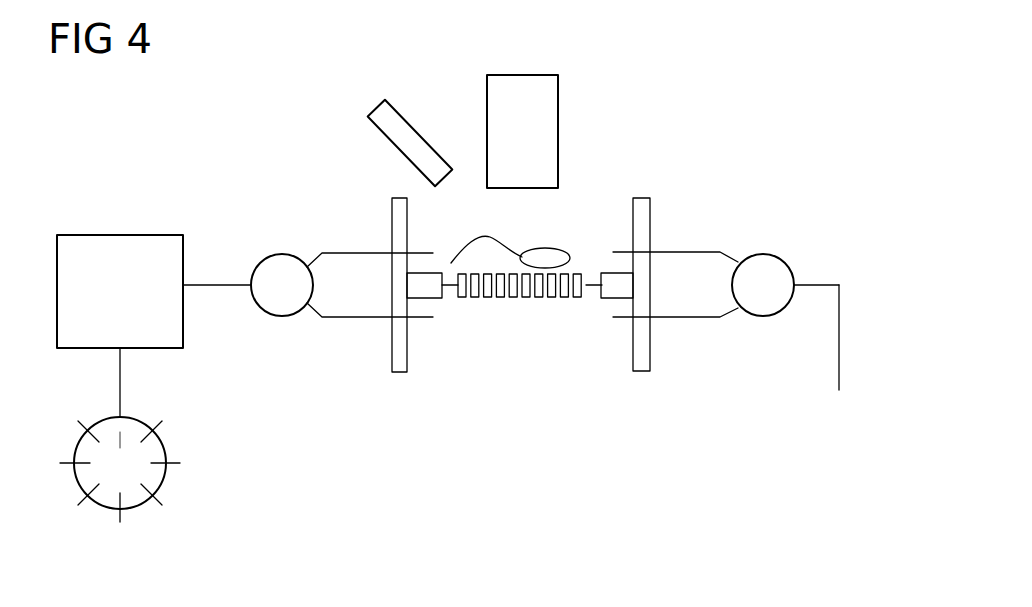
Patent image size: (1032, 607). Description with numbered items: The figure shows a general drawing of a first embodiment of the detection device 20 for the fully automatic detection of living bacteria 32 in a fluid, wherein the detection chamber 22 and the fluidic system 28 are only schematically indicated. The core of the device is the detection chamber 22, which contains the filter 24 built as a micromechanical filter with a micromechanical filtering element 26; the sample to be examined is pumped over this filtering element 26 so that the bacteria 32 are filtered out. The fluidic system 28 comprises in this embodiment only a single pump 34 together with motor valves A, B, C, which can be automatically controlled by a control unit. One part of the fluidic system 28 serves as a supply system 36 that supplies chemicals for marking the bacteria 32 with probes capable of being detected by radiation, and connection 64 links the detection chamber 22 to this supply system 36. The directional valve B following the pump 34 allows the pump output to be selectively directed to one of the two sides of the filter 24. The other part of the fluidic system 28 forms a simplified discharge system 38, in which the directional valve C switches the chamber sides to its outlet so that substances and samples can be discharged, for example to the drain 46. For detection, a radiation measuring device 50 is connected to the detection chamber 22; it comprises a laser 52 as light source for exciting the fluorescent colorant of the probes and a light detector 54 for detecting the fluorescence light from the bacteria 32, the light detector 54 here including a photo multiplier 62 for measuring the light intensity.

The detection device 20 is at (519, 361).
The detection chamber 22 is at (610, 348).
The filter 24 is at (503, 307).
The micromechanical filtering element 26 is at (526, 314).
The fluidic system 28 is at (91, 230).
The living bacteria 32 is at (546, 249).
The pump 34 is at (120, 235).
The supply system 36 is at (194, 359).
The discharge system 38 is at (662, 238).
The drain 46 is at (841, 338).
The radiation measuring device 50 is at (391, 113).
The laser 52 is at (380, 135).
The light detector 54 is at (564, 107).
The photo multiplier 62 is at (522, 75).
The connection 64 is at (366, 328).
The motor valve A is at (166, 473).
The 3/2 directional valve B is at (284, 254).
The 3/2 directional valve C is at (763, 318).